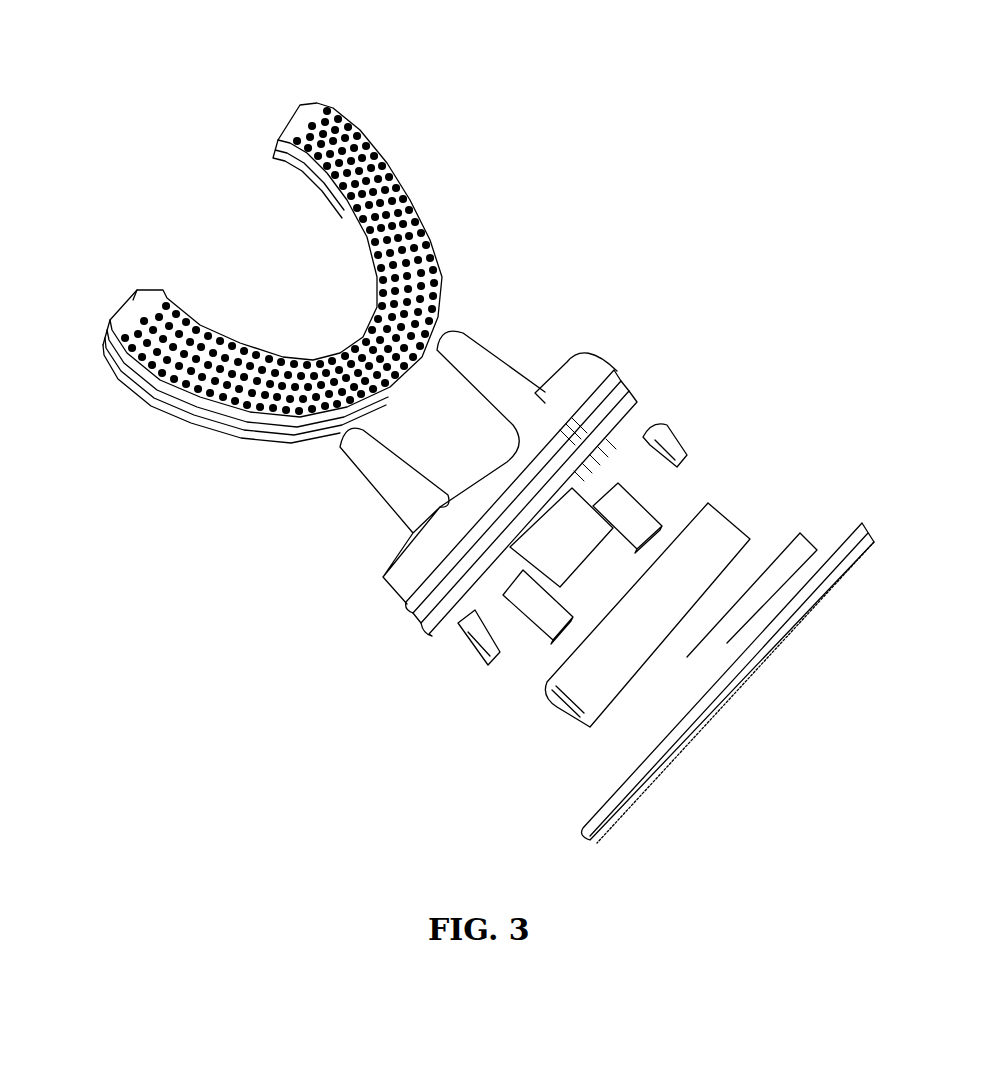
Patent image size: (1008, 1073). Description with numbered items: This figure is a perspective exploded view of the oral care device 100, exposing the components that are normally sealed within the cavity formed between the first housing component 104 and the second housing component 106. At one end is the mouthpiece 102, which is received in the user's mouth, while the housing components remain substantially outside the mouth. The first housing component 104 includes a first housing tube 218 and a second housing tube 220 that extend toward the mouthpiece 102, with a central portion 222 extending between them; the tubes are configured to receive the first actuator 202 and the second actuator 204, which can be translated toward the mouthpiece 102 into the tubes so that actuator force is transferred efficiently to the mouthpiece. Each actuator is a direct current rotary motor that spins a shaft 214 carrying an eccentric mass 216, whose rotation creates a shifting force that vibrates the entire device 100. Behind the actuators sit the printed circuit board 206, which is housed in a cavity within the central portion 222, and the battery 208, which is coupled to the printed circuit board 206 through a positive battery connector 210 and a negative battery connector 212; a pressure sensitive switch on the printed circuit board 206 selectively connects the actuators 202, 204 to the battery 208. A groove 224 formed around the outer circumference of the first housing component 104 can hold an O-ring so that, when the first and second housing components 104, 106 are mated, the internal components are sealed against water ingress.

The oral care device 100 is at (750, 104).
The mouthpiece 102 is at (128, 433).
The first housing component 104 is at (648, 306).
The second housing component 106 is at (859, 498).
The first actuator 202 is at (648, 523).
The second actuator 204 is at (540, 615).
The printed circuit board 206 is at (573, 550).
The battery 208 is at (734, 558).
The positive battery connector 210 is at (680, 450).
The negative battery connector 212 is at (472, 648).
The shaft 214 is at (601, 484).
The eccentric mass 216 is at (596, 470).
The first housing tube 218 is at (508, 383).
The second housing tube 220 is at (398, 492).
The central portion 222 is at (434, 374).
The groove 224 is at (433, 608).